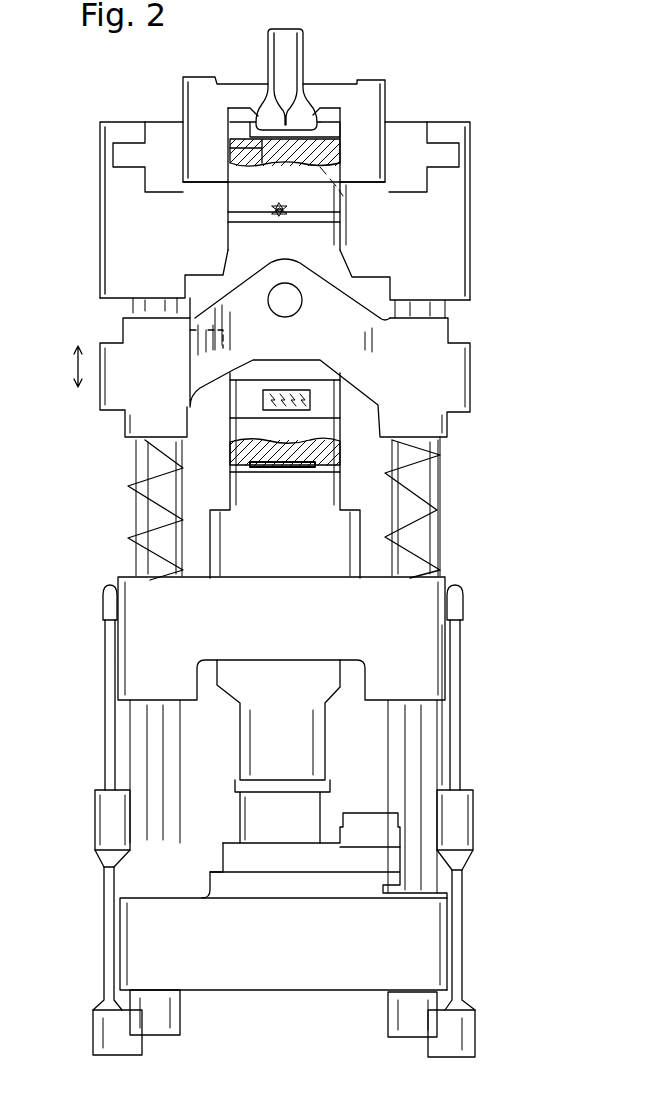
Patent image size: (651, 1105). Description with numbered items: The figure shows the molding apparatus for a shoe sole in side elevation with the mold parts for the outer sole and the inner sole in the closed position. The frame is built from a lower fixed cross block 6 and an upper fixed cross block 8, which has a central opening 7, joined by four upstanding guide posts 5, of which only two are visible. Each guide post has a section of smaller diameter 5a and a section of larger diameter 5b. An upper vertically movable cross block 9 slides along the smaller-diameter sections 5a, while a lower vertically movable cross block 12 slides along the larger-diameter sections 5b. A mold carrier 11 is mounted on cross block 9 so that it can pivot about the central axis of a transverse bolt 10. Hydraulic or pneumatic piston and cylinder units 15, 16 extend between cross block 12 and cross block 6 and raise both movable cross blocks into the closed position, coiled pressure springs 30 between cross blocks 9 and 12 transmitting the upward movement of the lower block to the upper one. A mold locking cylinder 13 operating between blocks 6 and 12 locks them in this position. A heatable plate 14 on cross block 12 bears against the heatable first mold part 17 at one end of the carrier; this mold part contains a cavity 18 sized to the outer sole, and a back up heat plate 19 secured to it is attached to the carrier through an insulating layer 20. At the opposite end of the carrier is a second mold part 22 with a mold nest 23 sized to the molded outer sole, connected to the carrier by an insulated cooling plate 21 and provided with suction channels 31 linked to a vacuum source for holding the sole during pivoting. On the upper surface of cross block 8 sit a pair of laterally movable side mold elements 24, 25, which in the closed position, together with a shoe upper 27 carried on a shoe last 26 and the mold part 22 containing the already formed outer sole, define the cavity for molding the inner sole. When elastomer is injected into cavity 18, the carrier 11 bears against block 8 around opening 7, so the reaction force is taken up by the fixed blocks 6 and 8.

The shoe last 26 is at (288, 62).
The shoe upper 27 is at (310, 105).
The side mold element 25 is at (345, 138).
The side mold element 24 is at (240, 130).
The suction channel 31 is at (347, 153).
The mold nest 23 is at (250, 147).
The second mold part 22 is at (260, 182).
The insulated cooling plate 21 is at (248, 212).
The central opening 7 is at (340, 233).
The upper fixed cross block 8 is at (445, 250).
The mold carrier 11 is at (368, 287).
The transverse bolt 10 is at (290, 305).
The upper vertically movable cross block 9 is at (437, 393).
The insulating layer 20 is at (237, 380).
The back up heat plate 19 is at (245, 402).
The coiled pressure spring 30 is at (150, 453).
The first mold part 17 is at (267, 463).
The guide post 5 is at (153, 515).
The cavity 18 is at (330, 460).
The heatable plate 14 is at (320, 483).
The guide post section of smaller diameter 5a is at (437, 540).
The lower vertically movable cross block 12 is at (403, 655).
The guide post section of larger diameter 5b is at (440, 723).
The piston and cylinder unit 16 is at (123, 745).
The mold locking cylinder 13 is at (313, 762).
The piston and cylinder unit 15 is at (103, 855).
The lower fixed cross block 6 is at (400, 975).